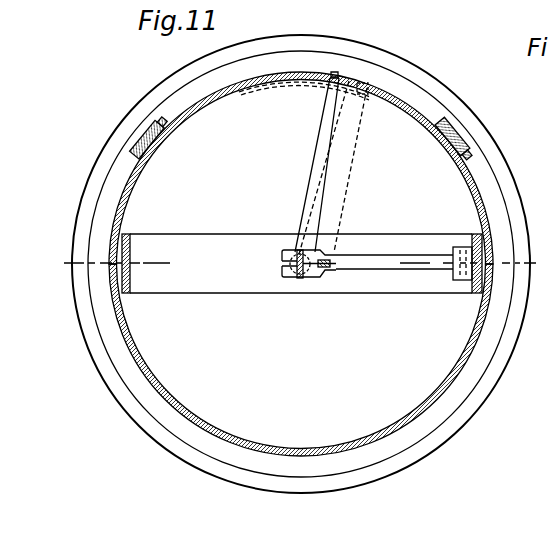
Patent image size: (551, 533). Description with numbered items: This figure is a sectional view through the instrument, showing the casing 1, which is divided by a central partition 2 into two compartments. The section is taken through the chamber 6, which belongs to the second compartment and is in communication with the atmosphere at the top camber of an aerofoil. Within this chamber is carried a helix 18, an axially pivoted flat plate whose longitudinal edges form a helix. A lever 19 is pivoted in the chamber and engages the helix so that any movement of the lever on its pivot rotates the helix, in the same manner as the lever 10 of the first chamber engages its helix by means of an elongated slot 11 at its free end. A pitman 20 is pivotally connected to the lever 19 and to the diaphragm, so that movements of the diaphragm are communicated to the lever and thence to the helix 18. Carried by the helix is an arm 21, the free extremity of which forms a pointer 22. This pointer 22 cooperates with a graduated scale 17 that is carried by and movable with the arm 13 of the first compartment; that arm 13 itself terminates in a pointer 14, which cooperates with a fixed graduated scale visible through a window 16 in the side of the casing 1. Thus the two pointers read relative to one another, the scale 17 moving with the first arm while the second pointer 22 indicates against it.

The casing 1 is at (293, 29).
The central partition 2 is at (301, 168).
The chamber 6 is at (301, 360).
The lever 10 is at (298, 265).
The elongated slot 11 is at (283, 263).
The arm 13 is at (347, 155).
The pointer 14 is at (376, 86).
The window 16 is at (436, 132).
The graduated scale 17 is at (295, 86).
The helix 18 is at (298, 279).
The lever 19 is at (378, 258).
The pitman 20 is at (333, 258).
The arm 21 is at (312, 190).
The pointer 22 is at (346, 69).